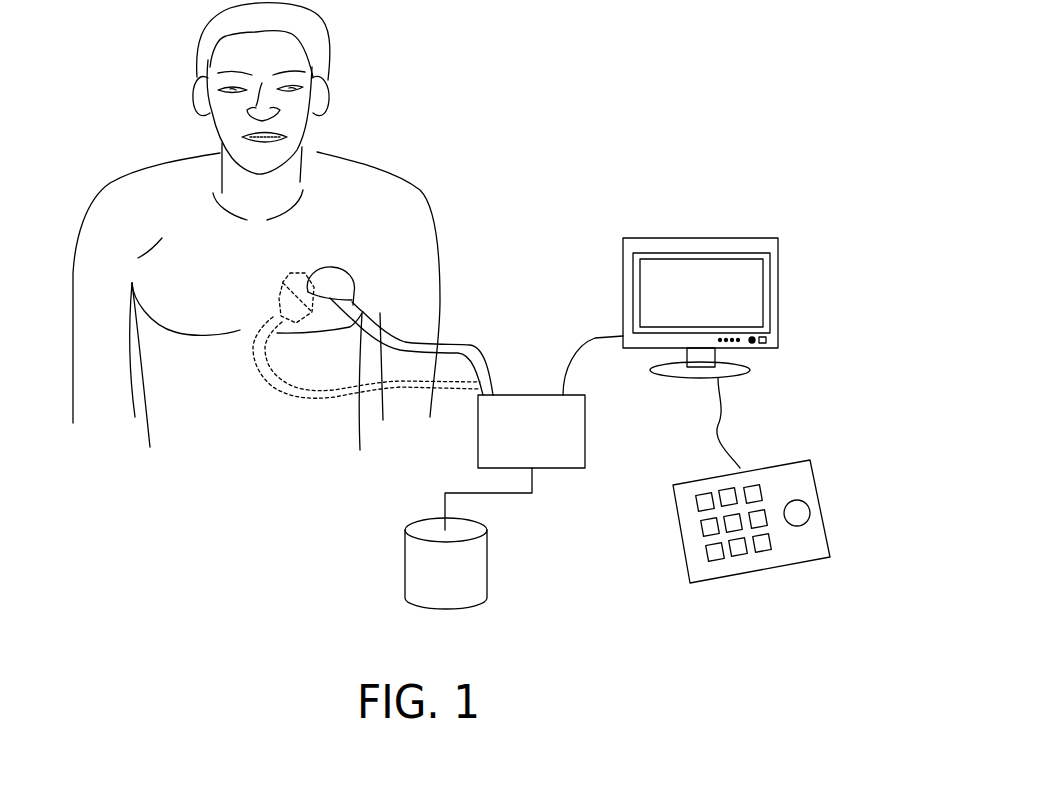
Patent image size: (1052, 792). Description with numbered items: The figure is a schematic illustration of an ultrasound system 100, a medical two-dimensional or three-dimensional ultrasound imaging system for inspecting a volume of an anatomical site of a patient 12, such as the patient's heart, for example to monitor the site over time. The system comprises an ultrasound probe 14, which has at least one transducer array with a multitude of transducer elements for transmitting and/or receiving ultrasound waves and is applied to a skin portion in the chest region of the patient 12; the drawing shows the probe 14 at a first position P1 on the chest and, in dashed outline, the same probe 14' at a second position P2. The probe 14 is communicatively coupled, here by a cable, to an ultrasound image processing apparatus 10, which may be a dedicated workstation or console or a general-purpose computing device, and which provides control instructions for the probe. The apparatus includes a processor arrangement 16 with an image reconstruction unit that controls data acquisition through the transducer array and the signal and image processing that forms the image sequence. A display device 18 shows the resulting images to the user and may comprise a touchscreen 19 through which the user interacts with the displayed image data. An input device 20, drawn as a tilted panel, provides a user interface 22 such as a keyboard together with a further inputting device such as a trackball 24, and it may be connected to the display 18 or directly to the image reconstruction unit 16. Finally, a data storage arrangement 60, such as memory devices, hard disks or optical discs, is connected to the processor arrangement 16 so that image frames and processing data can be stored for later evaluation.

The ultrasound system 100 is at (690, 102).
The ultrasound image processing apparatus 10 is at (533, 326).
The patient 12 is at (380, 190).
The ultrasound probe 14 is at (400, 254).
The ultrasound probe in second position 14' is at (347, 318).
The first probe position P1 is at (363, 275).
The second probe position P2 is at (262, 297).
The processor arrangement 16 is at (585, 438).
The display device 18 is at (713, 238).
The touchscreen 19 is at (750, 298).
The input device 20 is at (680, 547).
The user interface 22 is at (741, 572).
The trackball 24 is at (796, 512).
The data storage arrangement 60 is at (417, 553).